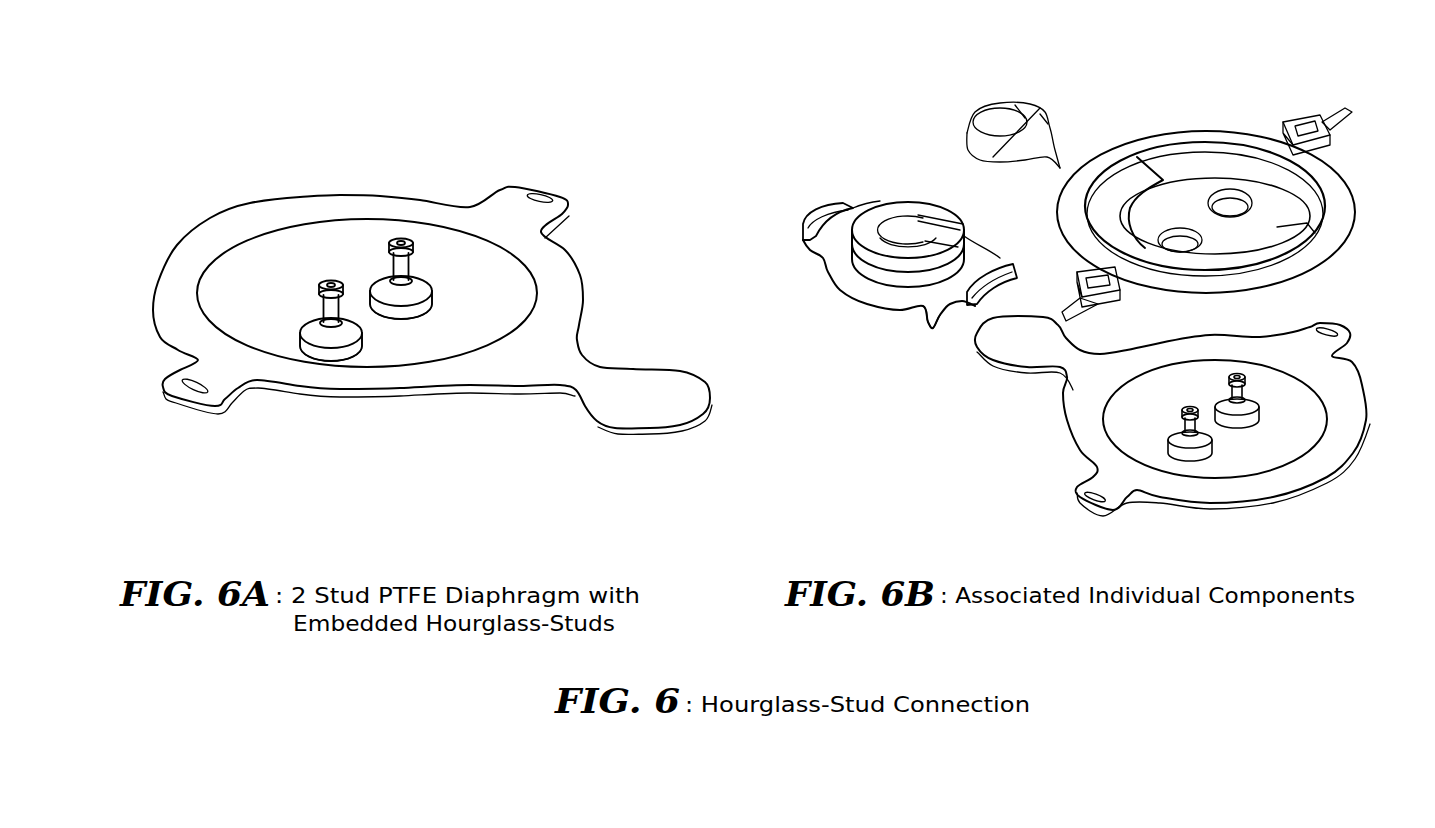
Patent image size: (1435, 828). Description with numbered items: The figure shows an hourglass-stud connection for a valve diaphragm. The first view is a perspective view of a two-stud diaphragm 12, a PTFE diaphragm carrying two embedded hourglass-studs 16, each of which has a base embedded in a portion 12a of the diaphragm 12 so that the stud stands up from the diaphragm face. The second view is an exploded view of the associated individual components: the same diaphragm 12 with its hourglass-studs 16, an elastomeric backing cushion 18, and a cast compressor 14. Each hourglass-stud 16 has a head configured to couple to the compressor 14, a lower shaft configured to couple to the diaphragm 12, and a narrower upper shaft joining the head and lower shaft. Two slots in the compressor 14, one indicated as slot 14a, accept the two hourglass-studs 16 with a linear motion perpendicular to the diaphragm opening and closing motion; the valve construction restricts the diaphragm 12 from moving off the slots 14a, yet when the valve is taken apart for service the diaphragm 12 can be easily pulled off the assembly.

In FIG. 6A, the diaphragm 12 is at (335, 408).
In FIG. 6B, the diaphragm 12 is at (1060, 475).
In FIG. 6A, the portion of the diaphragm 12a is at (432, 300).
In FIG. 6B, the compressor 14 is at (852, 314).
In FIG. 6B, the slot 14a is at (937, 330).
In FIG. 6A, the hourglass-stud 16 is at (396, 234).
In FIG. 6B, the hourglass-stud 16 is at (1212, 433).
In FIG. 6B, the backing cushion 18 is at (1158, 122).